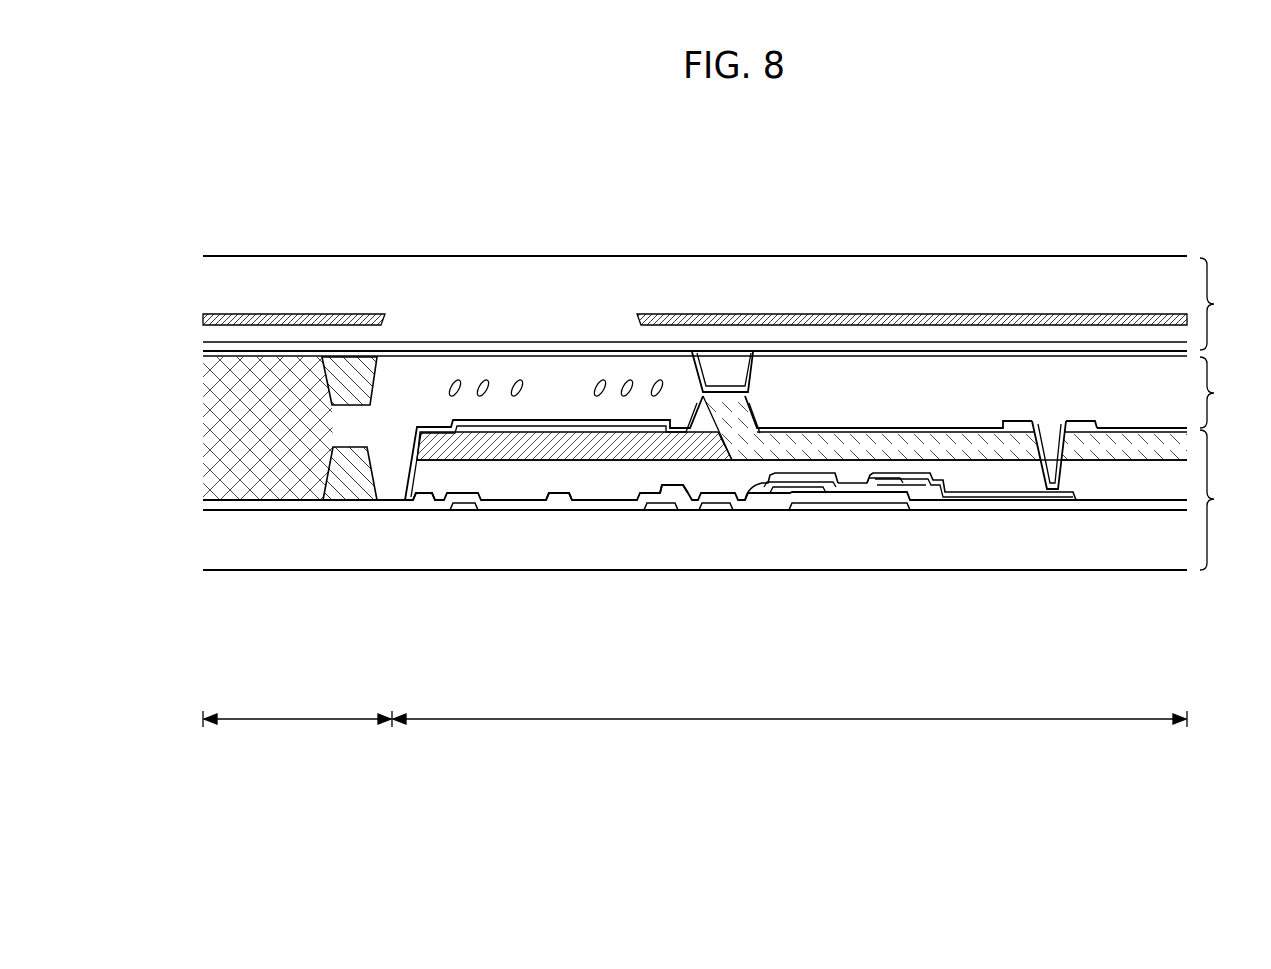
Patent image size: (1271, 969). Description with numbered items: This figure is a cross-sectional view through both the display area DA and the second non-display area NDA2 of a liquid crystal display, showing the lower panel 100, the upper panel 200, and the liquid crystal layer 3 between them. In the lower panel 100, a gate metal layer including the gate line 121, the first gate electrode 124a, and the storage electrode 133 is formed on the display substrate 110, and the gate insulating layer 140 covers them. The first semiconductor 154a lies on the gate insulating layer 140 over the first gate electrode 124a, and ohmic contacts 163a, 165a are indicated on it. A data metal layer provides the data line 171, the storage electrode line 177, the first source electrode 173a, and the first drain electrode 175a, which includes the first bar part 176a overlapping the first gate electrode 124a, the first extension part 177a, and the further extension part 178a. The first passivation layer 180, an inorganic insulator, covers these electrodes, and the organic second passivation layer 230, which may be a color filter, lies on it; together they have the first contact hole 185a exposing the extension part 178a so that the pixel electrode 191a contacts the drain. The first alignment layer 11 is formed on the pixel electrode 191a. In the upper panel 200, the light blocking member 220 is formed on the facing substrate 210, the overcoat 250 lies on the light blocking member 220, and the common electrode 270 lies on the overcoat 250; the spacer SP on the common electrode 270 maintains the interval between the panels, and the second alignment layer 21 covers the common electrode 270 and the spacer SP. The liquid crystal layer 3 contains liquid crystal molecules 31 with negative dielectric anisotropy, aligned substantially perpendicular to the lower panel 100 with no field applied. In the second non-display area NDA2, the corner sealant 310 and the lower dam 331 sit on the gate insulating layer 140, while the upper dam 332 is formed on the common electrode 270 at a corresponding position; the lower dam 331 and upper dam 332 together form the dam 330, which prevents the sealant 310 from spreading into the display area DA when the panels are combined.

The facing substrate 210 is at (218, 282).
The light blocking member 220 is at (212, 322).
The overcoat 250 is at (214, 334).
The common electrode 270 is at (215, 352).
The second alignment layer 21 is at (1133, 353).
The corner sealant 310 is at (215, 428).
The dam 330 is at (317, 321).
The lower dam 331 is at (345, 468).
The upper dam 332 is at (346, 365).
The second passivation layer 230 is at (586, 440).
The spacer SP is at (722, 378).
The liquid crystal molecules 31 is at (522, 388).
The pixel electrode 191a is at (1010, 428).
The first contact hole 185a is at (1050, 470).
The first alignment layer 11 is at (1167, 430).
The first passivation layer 180 is at (1135, 485).
The gate insulating layer 140 is at (215, 505).
The display substrate 110 is at (215, 541).
The data line 171 is at (423, 500).
The storage electrode 133 is at (462, 507).
The storage electrode line 177 is at (557, 496).
The gate line 121 is at (714, 505).
The first gate electrode 124a is at (865, 505).
The first source electrode 173a is at (748, 493).
The first semiconductor 154a is at (815, 488).
The ohmic contact layer 163a is at (800, 483).
The ohmic contact layer 165a is at (893, 483).
The first drain electrode 175a is at (978, 575).
The first bar part 176a is at (928, 490).
The first extension part 177a is at (993, 492).
The first extension part 178a is at (1062, 492).
The upper panel 200 is at (1225, 304).
The liquid crystal layer 3 is at (1216, 392).
The lower panel 100 is at (1224, 500).
The second non-display area NDA2 is at (297, 732).
The display area DA is at (790, 732).